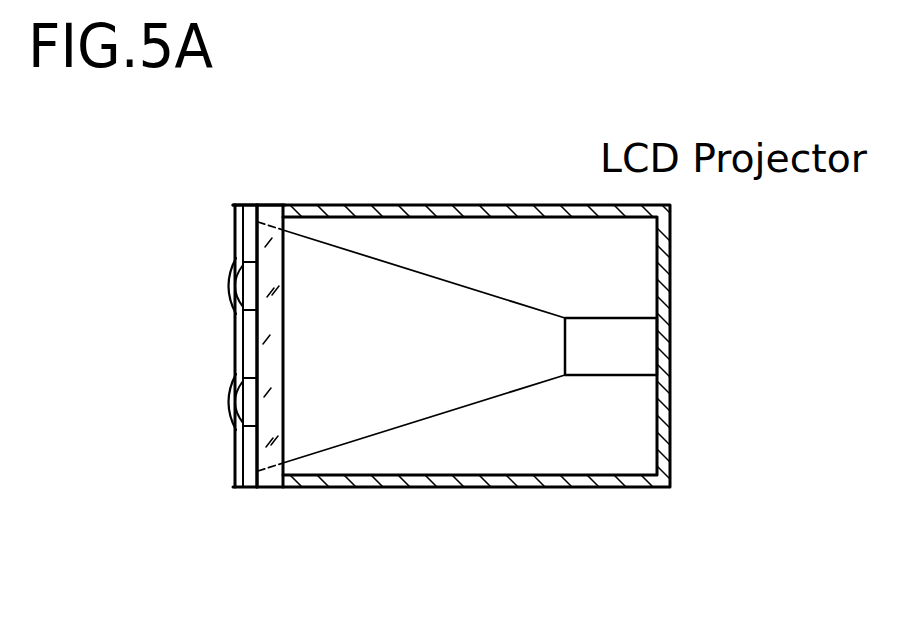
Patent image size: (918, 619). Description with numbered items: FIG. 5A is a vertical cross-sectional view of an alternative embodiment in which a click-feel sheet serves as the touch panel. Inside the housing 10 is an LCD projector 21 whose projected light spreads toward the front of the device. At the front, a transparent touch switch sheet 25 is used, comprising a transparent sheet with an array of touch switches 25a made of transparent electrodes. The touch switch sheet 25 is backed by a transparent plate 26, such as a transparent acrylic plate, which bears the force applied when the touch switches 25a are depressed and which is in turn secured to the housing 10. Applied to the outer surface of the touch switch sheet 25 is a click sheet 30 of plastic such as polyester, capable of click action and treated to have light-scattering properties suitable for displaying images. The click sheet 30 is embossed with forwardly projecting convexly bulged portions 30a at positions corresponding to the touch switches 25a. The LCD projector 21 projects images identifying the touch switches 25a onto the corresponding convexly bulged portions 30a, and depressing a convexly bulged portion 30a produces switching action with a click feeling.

The housing 10 is at (403, 205).
The LCD projector 21 is at (640, 343).
The touch switch sheet 25 is at (249, 205).
The touch switches 25a is at (250, 402).
The transparent plate 26 is at (263, 487).
The click sheet 30 is at (233, 472).
The convexly bulged portions 30a is at (225, 387).